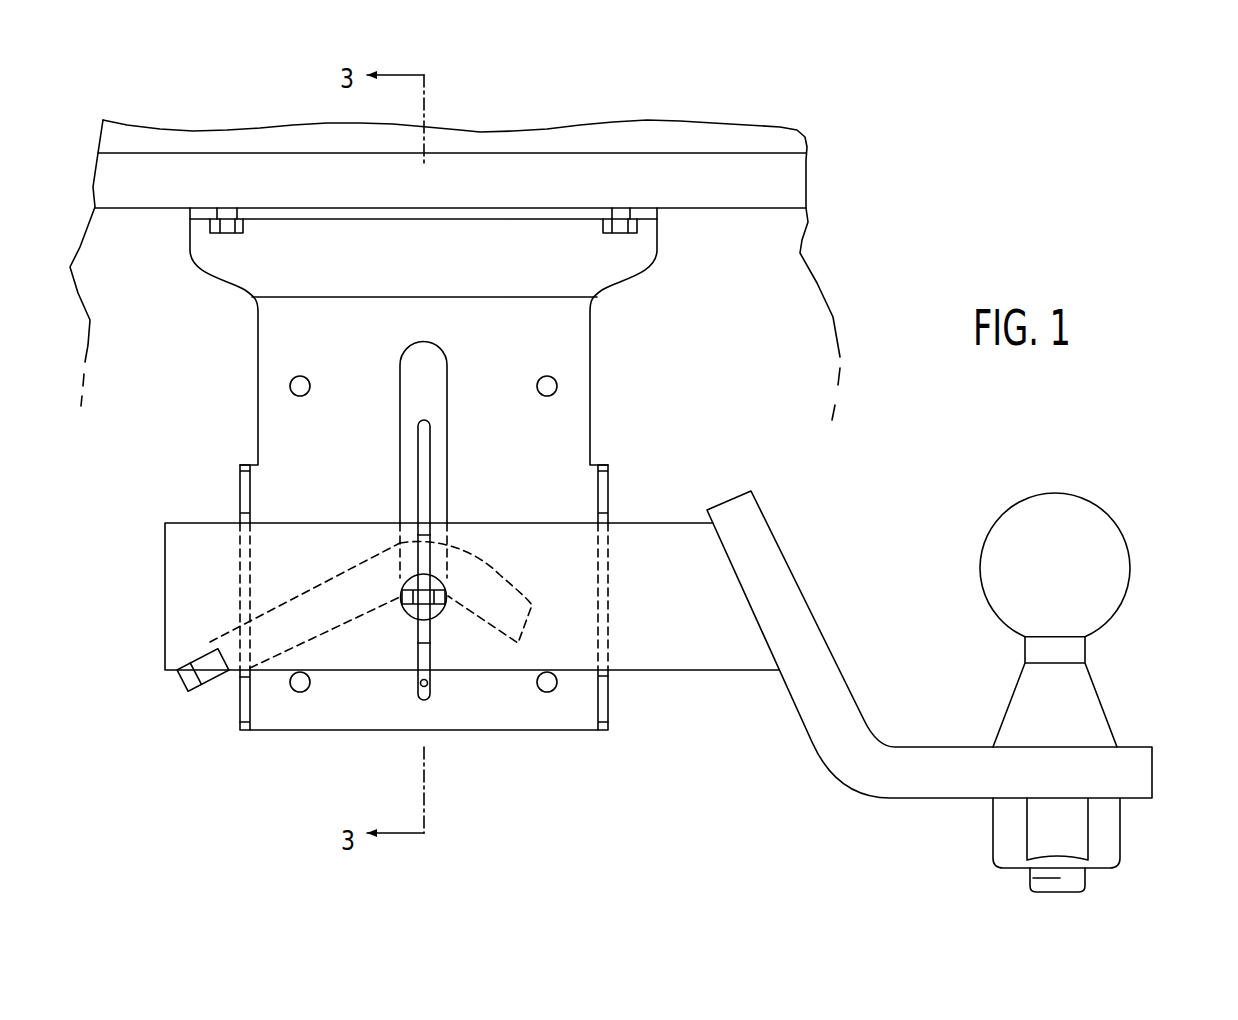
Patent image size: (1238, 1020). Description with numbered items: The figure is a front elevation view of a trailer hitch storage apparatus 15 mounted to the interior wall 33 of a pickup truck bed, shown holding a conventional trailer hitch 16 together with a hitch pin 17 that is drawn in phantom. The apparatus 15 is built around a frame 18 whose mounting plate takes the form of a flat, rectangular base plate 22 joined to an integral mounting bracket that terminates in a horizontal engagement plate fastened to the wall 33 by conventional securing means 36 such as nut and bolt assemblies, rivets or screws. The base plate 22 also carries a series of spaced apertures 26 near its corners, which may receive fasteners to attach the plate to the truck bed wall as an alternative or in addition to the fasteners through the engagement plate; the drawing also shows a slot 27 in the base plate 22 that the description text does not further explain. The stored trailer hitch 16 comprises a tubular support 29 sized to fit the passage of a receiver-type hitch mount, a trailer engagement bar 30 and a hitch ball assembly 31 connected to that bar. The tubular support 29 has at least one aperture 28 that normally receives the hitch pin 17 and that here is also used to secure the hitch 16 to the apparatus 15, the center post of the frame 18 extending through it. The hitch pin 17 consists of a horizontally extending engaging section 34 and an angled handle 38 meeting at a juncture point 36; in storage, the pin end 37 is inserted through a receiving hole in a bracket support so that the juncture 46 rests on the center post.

The trailer hitch storage apparatus 15 is at (723, 397).
The trailer hitch 16 is at (657, 502).
The hitch pin 17 is at (531, 603).
The frame 18 is at (610, 432).
The base plate 22 is at (307, 324).
The spaced apertures 26 is at (550, 386).
The slot 27 is at (413, 388).
The aperture 28 is at (412, 610).
The tubular support 29 is at (573, 638).
The trailer engagement bar 30 is at (868, 767).
The hitch ball assembly 31 is at (1135, 562).
The interior wall 33 is at (797, 178).
The engaging section 34 is at (358, 566).
The securing means 36 is at (631, 237).
The end of hitch pin 37 is at (185, 678).
The angled handle 38 is at (478, 592).
The juncture 46 is at (439, 606).